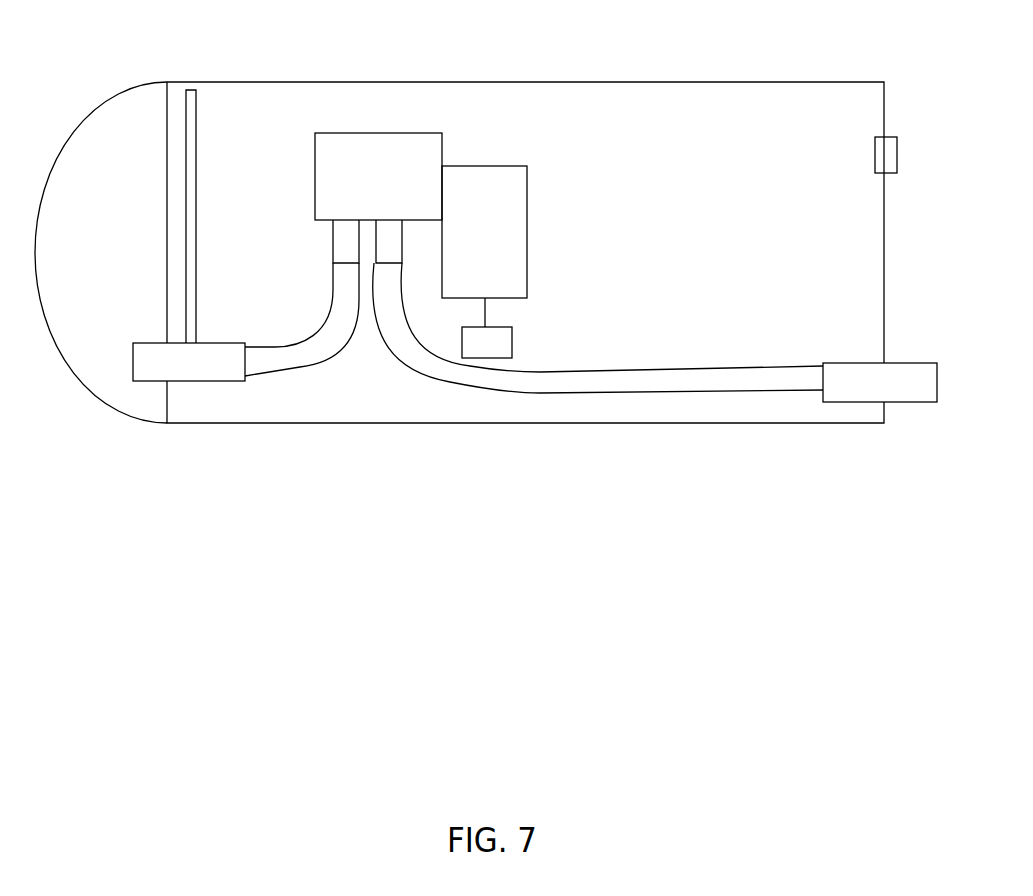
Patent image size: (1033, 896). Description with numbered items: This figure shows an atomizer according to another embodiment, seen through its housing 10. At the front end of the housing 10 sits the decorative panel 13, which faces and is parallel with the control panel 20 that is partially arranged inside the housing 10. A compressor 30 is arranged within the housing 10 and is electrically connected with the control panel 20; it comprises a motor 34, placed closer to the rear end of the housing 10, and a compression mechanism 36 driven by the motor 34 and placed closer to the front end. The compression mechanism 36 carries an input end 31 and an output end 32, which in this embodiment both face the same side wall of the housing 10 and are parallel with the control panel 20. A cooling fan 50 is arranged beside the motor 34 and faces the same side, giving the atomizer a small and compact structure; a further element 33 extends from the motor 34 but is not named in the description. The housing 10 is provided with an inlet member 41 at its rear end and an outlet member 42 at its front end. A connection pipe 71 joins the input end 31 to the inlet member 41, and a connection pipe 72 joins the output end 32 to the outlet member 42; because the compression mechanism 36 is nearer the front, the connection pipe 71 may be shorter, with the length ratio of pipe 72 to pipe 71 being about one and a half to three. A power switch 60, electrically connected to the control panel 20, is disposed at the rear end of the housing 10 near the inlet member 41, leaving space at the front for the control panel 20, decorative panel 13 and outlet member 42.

The housing 10 is at (398, 423).
The decorative panel 13 is at (166, 207).
The control panel 20 is at (191, 165).
The compressor 30 is at (481, 162).
The input end 31 is at (394, 245).
The output end 32 is at (347, 233).
The connecting wire 33 is at (485, 313).
The motor 34 is at (510, 238).
The compression mechanism 36 is at (398, 177).
The inlet member 41 is at (866, 383).
The outlet member 42 is at (186, 383).
The cooling fan 50 is at (492, 348).
The power switch 60 is at (875, 137).
The connection pipe 71 is at (296, 350).
The connection pipe 72 is at (687, 380).